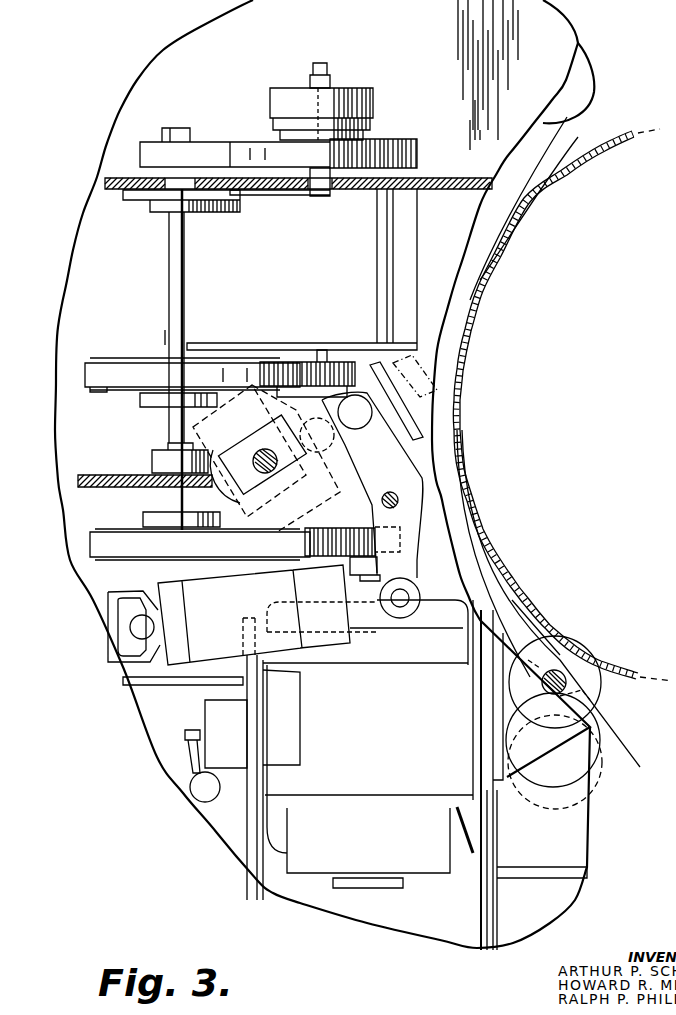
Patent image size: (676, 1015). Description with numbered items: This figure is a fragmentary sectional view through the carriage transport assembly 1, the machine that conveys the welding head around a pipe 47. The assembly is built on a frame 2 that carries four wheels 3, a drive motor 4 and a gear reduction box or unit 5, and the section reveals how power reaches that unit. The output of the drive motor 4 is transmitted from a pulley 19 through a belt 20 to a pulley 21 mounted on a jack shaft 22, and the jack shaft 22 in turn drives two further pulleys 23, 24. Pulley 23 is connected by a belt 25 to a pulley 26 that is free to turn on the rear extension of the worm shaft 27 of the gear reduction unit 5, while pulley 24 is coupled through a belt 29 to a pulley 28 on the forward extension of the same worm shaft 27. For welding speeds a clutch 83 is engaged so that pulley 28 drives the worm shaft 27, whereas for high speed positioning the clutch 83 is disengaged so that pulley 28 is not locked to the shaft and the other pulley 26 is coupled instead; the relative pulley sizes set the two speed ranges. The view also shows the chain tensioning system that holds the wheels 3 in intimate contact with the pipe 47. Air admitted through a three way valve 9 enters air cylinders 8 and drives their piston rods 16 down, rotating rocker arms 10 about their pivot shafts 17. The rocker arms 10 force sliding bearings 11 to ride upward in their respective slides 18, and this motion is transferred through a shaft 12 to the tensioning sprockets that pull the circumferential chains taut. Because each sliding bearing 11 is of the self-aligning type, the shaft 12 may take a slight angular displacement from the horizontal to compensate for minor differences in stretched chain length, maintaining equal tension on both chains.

The carriage transport assembly 1 is at (264, 905).
The frame 2 is at (92, 221).
The wheels 3 is at (592, 85).
The drive motor 4 is at (427, 866).
The gear reduction box or unit 5 is at (203, 267).
The air cylinders 8 is at (207, 643).
The three way valve 9 is at (188, 760).
The rocker arms 10 is at (403, 563).
The sliding bearings 11 is at (240, 465).
The shaft 12 is at (293, 457).
The piston rods 16 is at (370, 604).
The pivot shafts 17 is at (399, 497).
The slides 18 is at (236, 486).
The pulley 19 is at (343, 528).
The belt 20 is at (103, 545).
The pulley 21 is at (107, 529).
The jack shaft 22 is at (178, 326).
The pulley 23 is at (113, 388).
The pulley 24 is at (197, 142).
The belt 25 is at (97, 375).
The pulley 26 is at (320, 352).
The worm shaft 27 is at (310, 78).
The pulley 28 is at (307, 170).
The belt 29 is at (222, 153).
The pipe 47 is at (460, 378).
The clutch 83 is at (347, 95).